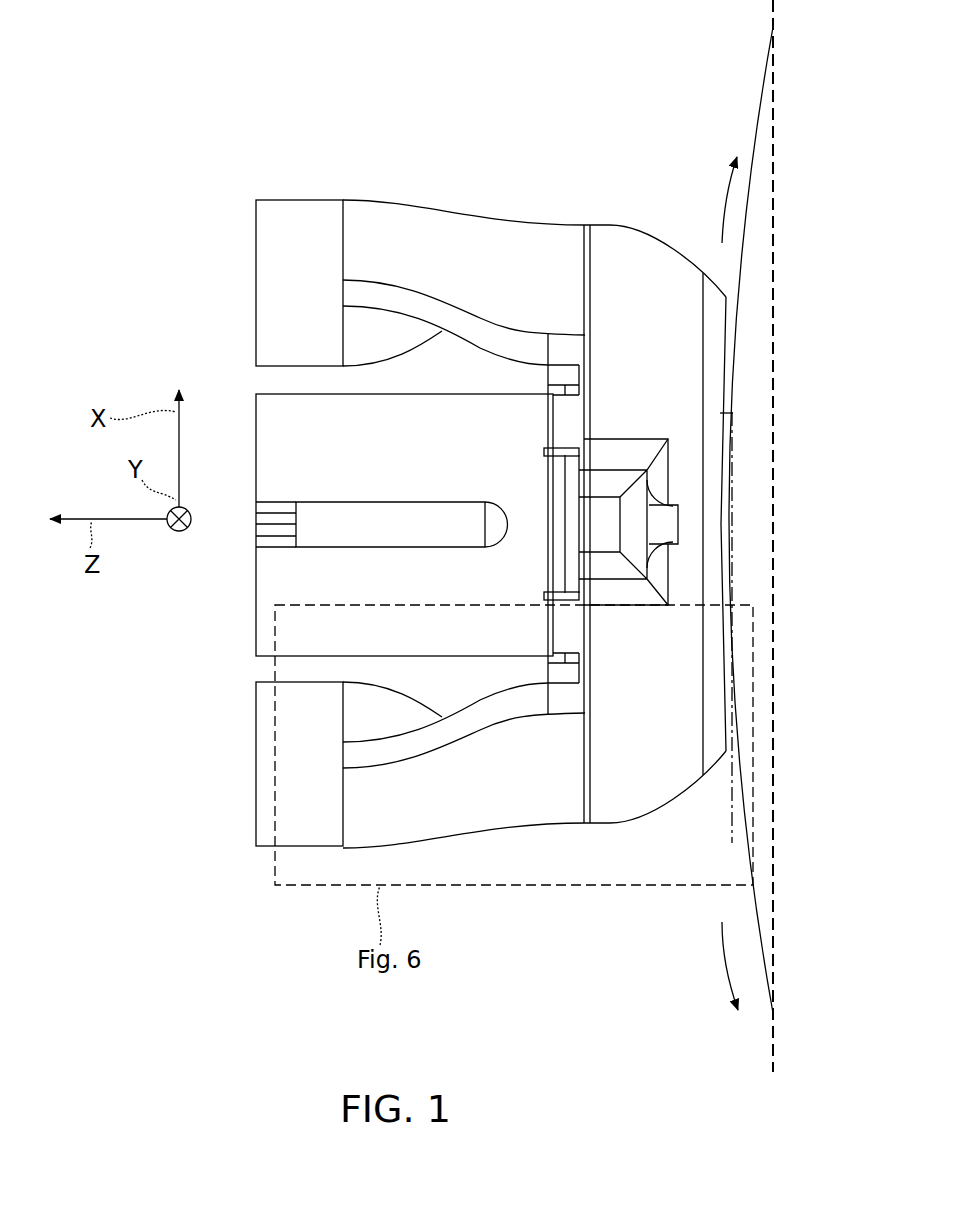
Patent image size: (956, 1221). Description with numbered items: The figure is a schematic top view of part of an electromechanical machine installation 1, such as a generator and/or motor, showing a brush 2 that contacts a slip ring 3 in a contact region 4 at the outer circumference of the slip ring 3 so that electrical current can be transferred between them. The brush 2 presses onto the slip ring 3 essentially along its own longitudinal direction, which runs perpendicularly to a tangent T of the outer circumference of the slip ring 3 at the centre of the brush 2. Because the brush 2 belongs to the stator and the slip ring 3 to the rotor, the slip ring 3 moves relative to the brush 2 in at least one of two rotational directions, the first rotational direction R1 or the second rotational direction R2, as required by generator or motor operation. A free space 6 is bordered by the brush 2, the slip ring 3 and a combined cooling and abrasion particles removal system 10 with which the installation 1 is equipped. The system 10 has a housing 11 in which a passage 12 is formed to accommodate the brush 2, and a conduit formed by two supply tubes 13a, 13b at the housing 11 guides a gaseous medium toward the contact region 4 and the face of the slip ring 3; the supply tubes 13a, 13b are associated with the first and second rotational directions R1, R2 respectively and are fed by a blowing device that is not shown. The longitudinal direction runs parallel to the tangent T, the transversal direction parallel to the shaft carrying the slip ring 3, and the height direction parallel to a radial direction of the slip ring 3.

The electromechanical machine installation 1 is at (142, 68).
The brush 2 is at (728, 425).
The slip ring 3 is at (745, 580).
The contact region 4 is at (744, 478).
The free space 6 is at (732, 344).
The combined cooling and abrasion particles removal system 10 is at (238, 767).
The housing 11 is at (607, 800).
The passage 12 is at (278, 578).
The supply tube 13a is at (295, 830).
The supply tube 13b is at (296, 225).
The tangent T is at (735, 825).
The first rotational direction R1 is at (720, 958).
The second rotational direction R2 is at (720, 200).